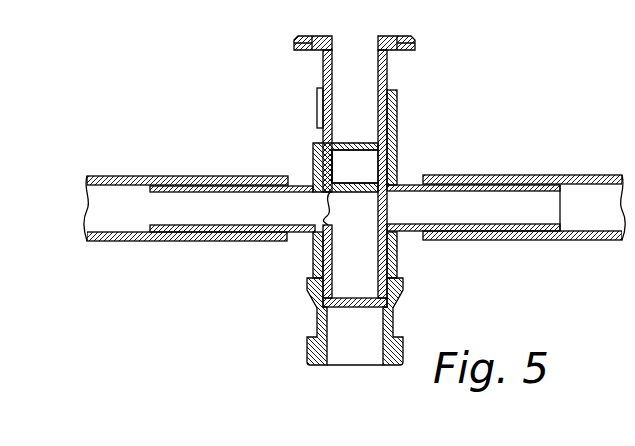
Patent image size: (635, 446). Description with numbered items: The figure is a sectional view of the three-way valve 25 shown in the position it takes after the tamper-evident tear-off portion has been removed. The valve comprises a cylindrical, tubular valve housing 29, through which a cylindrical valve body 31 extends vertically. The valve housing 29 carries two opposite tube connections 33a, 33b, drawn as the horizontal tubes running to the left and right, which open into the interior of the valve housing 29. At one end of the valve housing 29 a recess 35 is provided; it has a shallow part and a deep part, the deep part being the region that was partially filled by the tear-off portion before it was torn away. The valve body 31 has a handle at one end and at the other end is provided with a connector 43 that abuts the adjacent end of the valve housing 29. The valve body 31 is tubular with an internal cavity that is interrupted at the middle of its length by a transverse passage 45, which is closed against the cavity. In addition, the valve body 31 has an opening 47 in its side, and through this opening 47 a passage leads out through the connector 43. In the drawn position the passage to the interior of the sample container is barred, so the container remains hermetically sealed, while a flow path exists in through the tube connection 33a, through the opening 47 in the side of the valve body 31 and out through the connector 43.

The three-way valve 25 is at (414, 137).
The valve housing 29 is at (397, 112).
The valve body 31 is at (389, 72).
The tube connection 33a is at (314, 180).
The tube connection 33b is at (411, 177).
The recess 35 is at (318, 108).
The connector 43 is at (306, 353).
The transverse passage 45 is at (350, 168).
The opening 47 is at (328, 208).